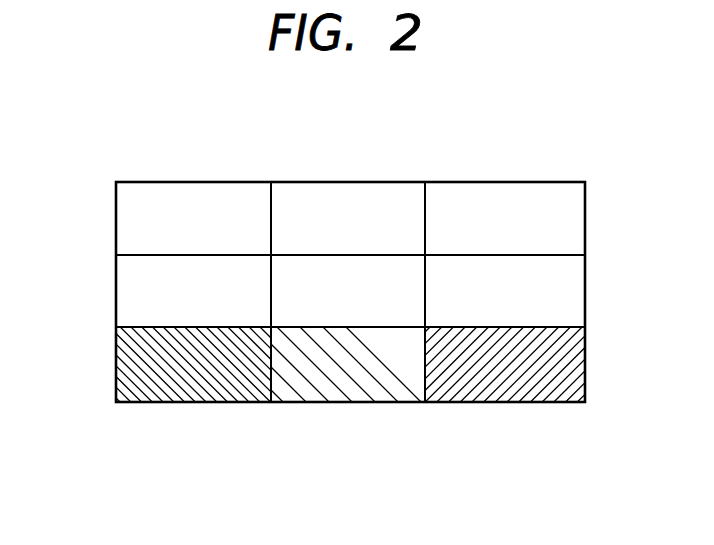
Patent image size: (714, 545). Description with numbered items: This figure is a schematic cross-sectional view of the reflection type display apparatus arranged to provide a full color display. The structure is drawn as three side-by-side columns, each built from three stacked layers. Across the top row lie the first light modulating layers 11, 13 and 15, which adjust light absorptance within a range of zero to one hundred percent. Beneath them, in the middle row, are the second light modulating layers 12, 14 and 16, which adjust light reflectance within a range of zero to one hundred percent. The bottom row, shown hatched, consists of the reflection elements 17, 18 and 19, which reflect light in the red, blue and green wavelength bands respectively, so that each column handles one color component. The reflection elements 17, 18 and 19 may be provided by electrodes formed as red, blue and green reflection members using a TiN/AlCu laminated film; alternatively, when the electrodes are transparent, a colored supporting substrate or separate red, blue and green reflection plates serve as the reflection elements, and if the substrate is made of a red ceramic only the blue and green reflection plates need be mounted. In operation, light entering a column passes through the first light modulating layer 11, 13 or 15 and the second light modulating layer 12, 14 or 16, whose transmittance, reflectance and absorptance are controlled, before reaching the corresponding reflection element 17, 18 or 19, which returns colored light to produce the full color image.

The first light modulating layer 11 is at (124, 218).
The second light modulating layer 12 is at (124, 296).
The first light modulating layer 13 is at (303, 207).
The second light modulating layer 14 is at (377, 270).
The first light modulating layer 15 is at (573, 213).
The second light modulating layer 16 is at (573, 290).
The reflection element 17 is at (124, 372).
The reflection element 18 is at (349, 388).
The reflection element 19 is at (573, 372).